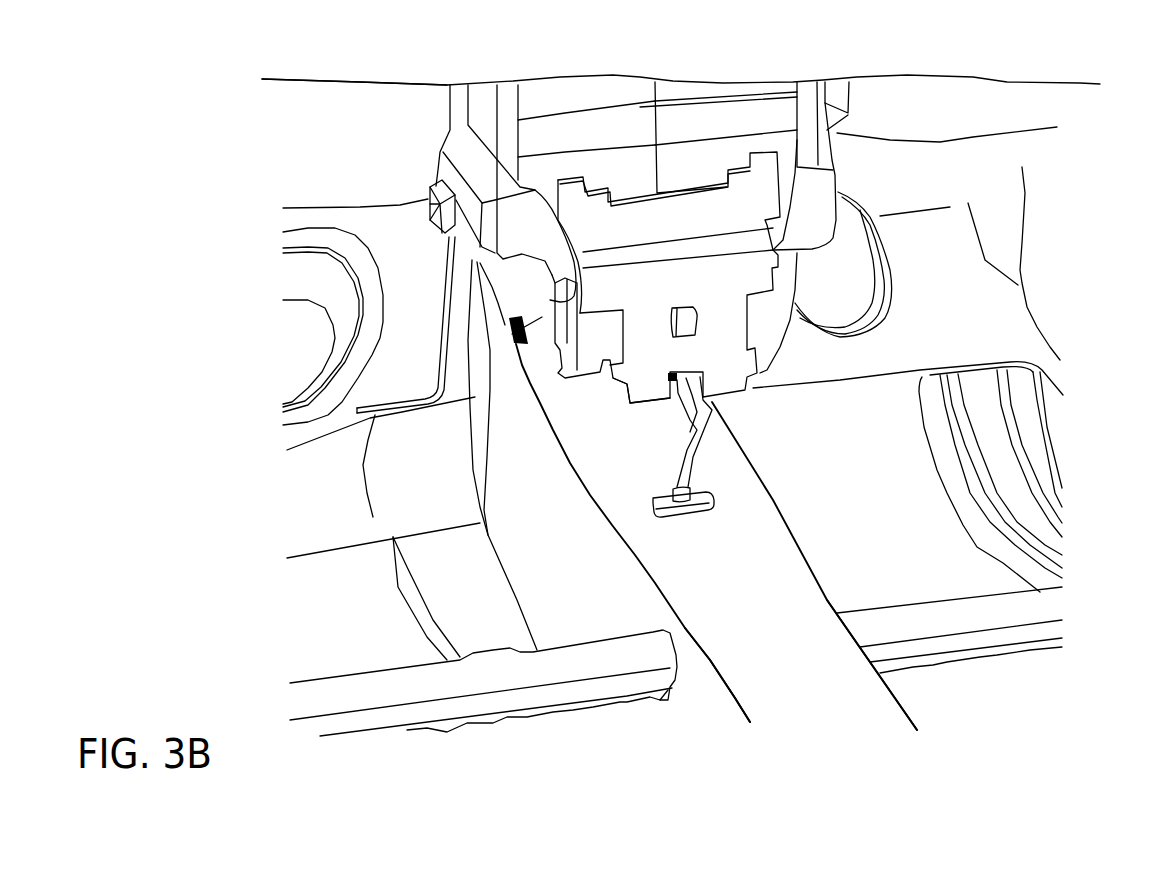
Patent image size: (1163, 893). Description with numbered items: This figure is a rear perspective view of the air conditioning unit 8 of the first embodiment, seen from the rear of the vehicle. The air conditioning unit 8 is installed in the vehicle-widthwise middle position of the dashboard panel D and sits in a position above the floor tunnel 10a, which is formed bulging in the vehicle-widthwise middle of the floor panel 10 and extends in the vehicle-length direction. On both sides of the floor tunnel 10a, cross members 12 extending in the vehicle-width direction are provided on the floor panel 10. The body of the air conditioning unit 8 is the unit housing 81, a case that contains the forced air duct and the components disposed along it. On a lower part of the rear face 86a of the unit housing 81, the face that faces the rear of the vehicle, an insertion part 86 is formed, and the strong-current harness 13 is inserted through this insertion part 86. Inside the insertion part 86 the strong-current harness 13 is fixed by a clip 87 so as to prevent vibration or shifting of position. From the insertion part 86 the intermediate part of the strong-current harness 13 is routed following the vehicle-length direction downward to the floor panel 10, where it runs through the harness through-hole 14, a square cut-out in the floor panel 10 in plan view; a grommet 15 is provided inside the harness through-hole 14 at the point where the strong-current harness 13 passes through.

The dashboard panel D is at (360, 147).
The air conditioning unit 8 is at (874, 112).
The floor panel 10 is at (984, 585).
The floor tunnel 10a is at (760, 620).
The cross members 12 is at (610, 661).
The strong-current harness 13 is at (697, 448).
The harness through-hole 14 is at (716, 500).
The grommet 15 is at (700, 513).
The unit housing 81 is at (523, 344).
The insertion part 86 is at (703, 402).
The rear face 86a is at (727, 316).
The clip 87 is at (672, 400).